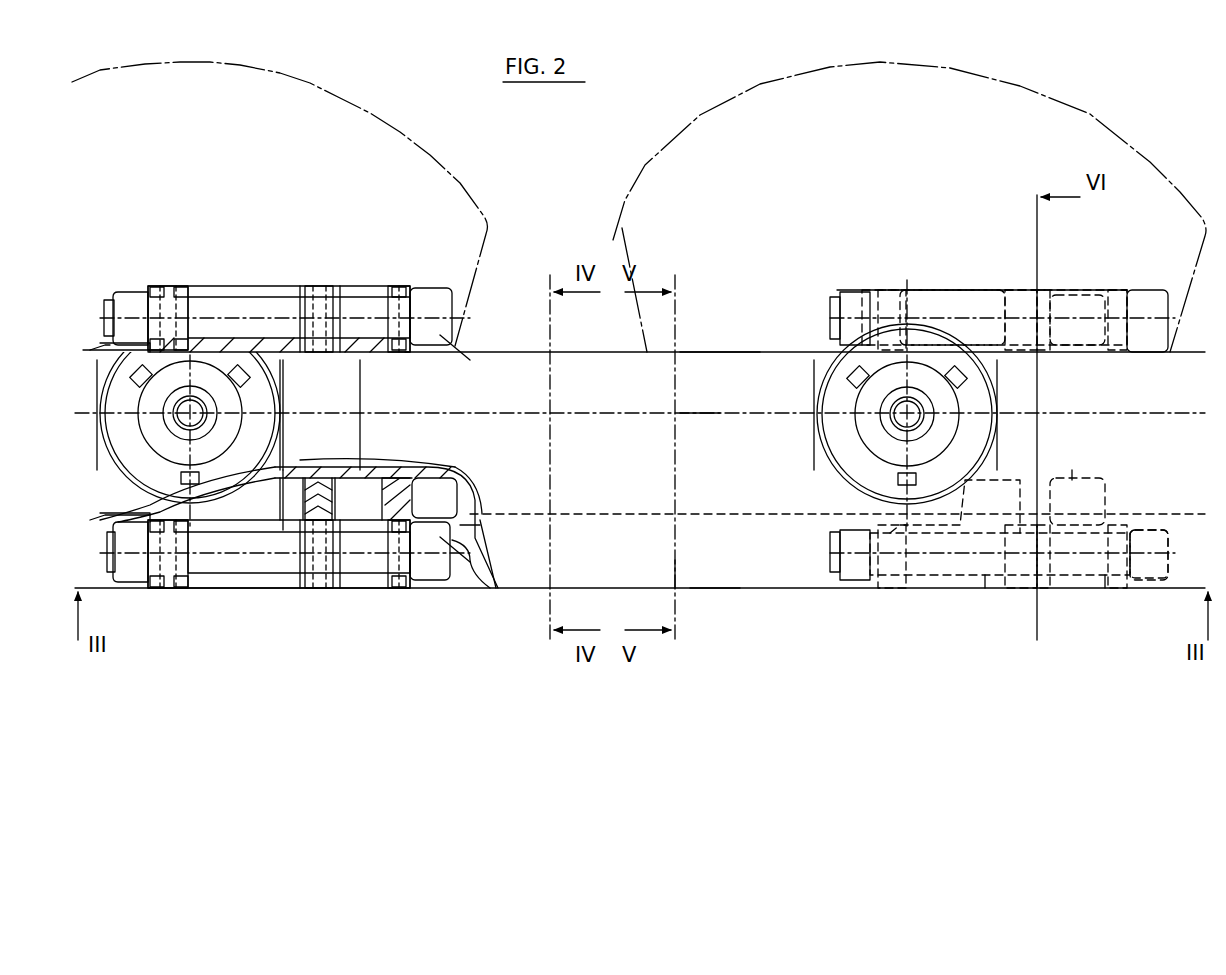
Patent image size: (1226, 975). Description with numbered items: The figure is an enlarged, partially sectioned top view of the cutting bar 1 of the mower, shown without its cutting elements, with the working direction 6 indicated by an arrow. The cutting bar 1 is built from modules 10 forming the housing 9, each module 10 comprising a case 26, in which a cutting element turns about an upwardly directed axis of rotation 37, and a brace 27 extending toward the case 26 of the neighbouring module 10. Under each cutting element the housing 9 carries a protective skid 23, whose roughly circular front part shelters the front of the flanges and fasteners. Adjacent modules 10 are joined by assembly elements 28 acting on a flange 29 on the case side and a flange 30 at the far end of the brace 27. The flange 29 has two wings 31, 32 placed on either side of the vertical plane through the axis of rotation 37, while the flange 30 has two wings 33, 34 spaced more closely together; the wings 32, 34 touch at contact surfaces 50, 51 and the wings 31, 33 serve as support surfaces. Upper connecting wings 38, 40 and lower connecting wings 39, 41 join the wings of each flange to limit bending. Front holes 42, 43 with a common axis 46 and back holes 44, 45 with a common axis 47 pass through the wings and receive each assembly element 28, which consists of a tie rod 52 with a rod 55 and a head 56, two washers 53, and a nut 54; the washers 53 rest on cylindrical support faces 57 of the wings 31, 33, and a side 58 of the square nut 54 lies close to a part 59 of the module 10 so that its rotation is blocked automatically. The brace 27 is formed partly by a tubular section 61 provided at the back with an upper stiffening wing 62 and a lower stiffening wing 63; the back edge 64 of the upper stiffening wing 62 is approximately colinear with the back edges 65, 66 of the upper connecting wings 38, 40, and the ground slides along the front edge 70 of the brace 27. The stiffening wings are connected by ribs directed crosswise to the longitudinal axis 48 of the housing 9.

The cutting bar 1 is at (520, 190).
The working direction 6 is at (645, 86).
The housing 9 is at (715, 594).
The module 10 is at (208, 592).
The protective skid 23 is at (346, 98).
The case 26 is at (130, 460).
The brace 27 is at (600, 460).
The assembly element 28 is at (435, 282).
The flange 29 is at (215, 282).
The flange 30 is at (362, 282).
The wing 31 is at (165, 284).
The wing 32 is at (308, 282).
The wing 33 is at (395, 282).
The wing 34 is at (338, 284).
The axis of rotation 37 is at (178, 410).
The connecting wing 38 is at (966, 292).
The connecting wing 39 is at (290, 350).
The connecting wing 40 is at (1082, 296).
The connecting wing 41 is at (380, 360).
The hole 42 is at (188, 284).
The hole 43 is at (345, 284).
The hole 44 is at (305, 512).
The hole 45 is at (360, 510).
The common axis 46 is at (460, 318).
The common axis 47 is at (455, 540).
The longitudinal axis 48 is at (692, 416).
The contact surface 50 is at (300, 470).
The contact surface 51 is at (318, 432).
The tie rod 52 is at (455, 300).
The washer 53 is at (152, 284).
The nut 54 is at (125, 290).
The rod 55 is at (243, 296).
The head 56 is at (462, 345).
The support face 57 is at (108, 290).
The side 58 is at (104, 305).
The part 59 is at (105, 338).
The tubular section 61 is at (440, 465).
The upper stiffening wing 62 is at (528, 590).
The lower stiffening wing 63 is at (470, 480).
The back edge 64 is at (695, 600).
The back edge 65 is at (988, 596).
The back edge 66 is at (1108, 596).
The front edge 70 is at (707, 348).